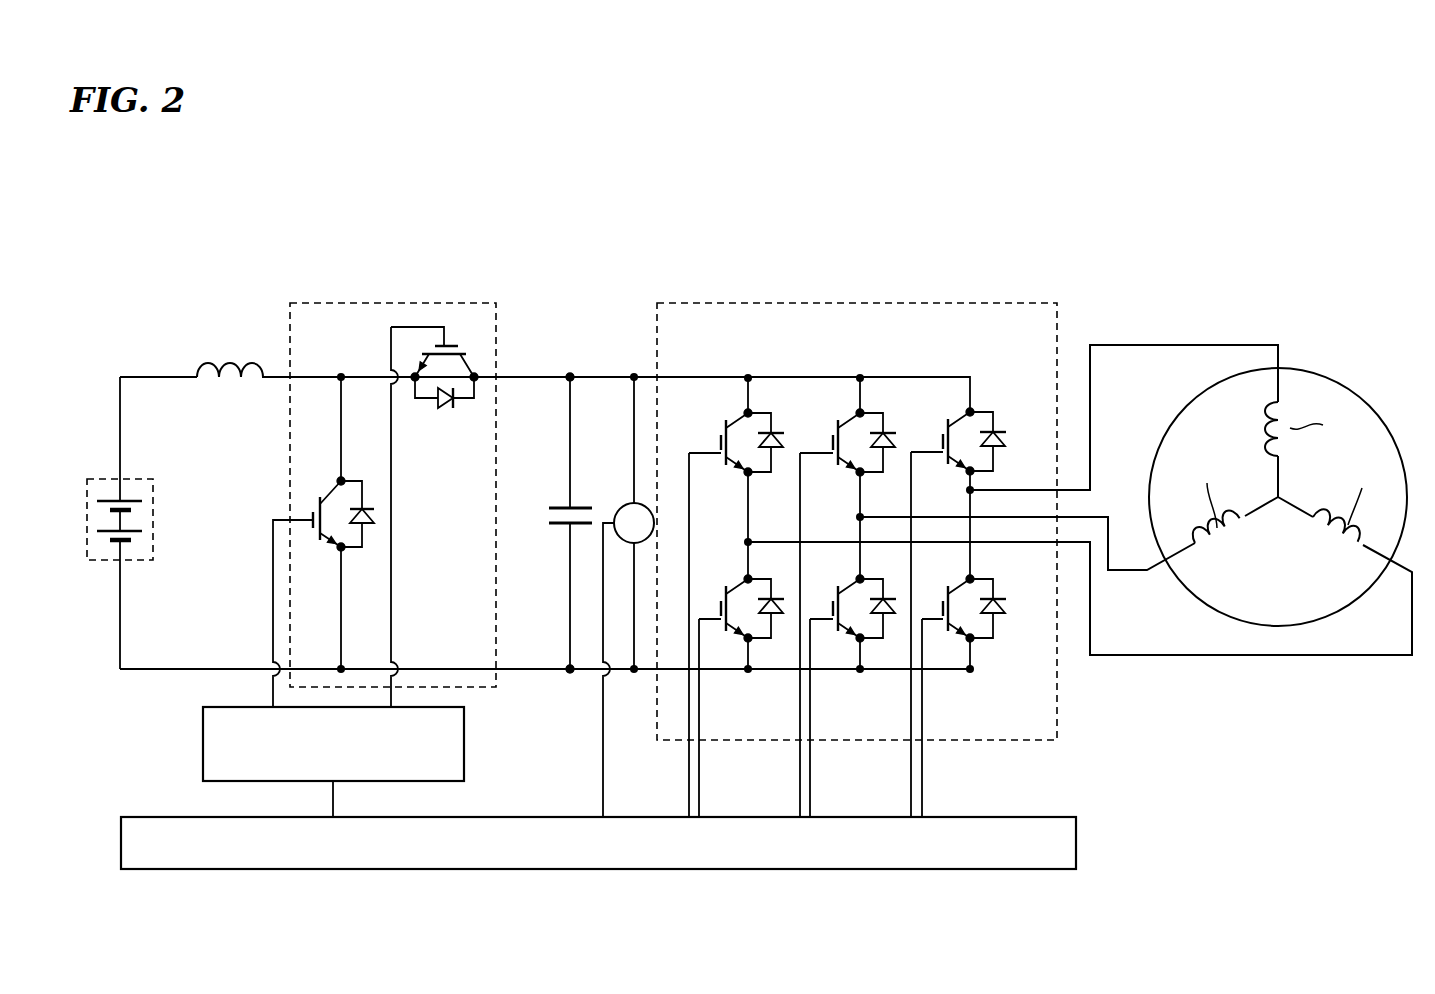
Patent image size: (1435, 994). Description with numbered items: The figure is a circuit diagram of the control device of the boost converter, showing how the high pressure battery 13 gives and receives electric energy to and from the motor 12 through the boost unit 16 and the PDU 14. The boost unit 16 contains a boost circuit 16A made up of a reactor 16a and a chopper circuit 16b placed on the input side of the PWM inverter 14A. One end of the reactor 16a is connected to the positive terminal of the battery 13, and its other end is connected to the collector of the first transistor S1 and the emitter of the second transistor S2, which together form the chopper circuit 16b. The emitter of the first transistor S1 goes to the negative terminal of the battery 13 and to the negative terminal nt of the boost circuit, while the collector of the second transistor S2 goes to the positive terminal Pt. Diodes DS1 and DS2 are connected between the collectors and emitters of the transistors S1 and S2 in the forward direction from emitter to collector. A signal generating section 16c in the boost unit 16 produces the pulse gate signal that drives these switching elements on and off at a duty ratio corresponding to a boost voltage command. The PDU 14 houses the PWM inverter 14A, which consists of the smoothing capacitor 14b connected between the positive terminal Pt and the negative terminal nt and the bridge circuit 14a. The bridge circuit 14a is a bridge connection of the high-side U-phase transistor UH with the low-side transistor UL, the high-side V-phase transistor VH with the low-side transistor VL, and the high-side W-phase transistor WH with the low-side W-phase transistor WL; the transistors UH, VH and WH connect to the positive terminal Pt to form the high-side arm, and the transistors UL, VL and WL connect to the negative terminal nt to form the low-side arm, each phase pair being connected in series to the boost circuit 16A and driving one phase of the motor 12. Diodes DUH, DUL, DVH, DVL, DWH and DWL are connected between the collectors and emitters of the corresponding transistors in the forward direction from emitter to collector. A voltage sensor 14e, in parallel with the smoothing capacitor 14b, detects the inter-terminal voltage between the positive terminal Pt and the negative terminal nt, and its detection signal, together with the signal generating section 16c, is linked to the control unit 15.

The motor 12 is at (1335, 378).
The high pressure battery 13 is at (102, 475).
The PDU 14 is at (612, 318).
The PWM inverter 14A is at (610, 362).
The bridge circuit 14a is at (1002, 302).
The smoothing capacitor 14b is at (580, 503).
The voltage sensor 14e is at (645, 505).
The control unit 15 is at (1076, 842).
The boost unit 16 is at (238, 298).
The boost circuit 16A is at (280, 316).
The reactor 16a is at (210, 355).
The chopper circuit 16b is at (325, 300).
The signal generating section 16c is at (203, 738).
The positive terminal Pt is at (570, 378).
The negative terminal nt is at (570, 673).
The first transistor S1 is at (320, 537).
The second transistor S2 is at (460, 350).
The diode DS1 is at (367, 525).
The diode DS2 is at (455, 405).
The high-side W-phase transistor WH is at (726, 425).
The diode DWH is at (785, 440).
The high-side V-phase transistor VH is at (836, 425).
The diode DVH is at (900, 440).
The high-side U-phase transistor UH is at (945, 425).
The diode DUH is at (1006, 440).
The low-side W-phase transistor WL is at (730, 622).
The diode DWL is at (782, 610).
The low-side V-phase transistor VL is at (844, 622).
The diode DVL is at (894, 610).
The low-side U-phase transistor UL is at (956, 622).
The diode DUL is at (1007, 610).